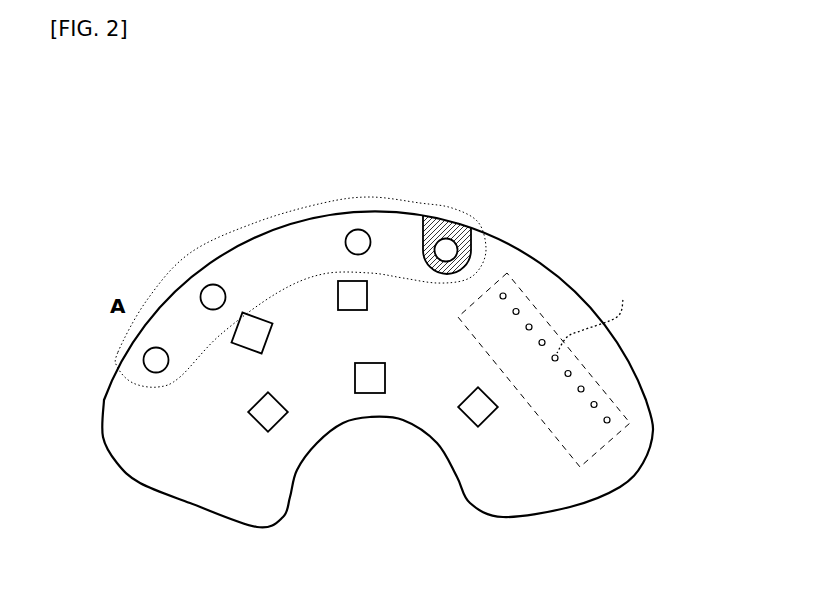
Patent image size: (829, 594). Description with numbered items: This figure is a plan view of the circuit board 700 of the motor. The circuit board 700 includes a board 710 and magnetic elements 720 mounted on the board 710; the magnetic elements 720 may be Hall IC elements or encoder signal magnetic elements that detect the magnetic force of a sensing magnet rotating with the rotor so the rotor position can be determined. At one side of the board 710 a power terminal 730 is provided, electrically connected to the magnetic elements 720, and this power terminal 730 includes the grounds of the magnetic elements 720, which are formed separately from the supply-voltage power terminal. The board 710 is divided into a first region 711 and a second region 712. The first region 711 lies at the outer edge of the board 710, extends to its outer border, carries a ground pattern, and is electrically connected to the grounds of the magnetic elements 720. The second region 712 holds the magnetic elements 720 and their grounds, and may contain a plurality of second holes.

The circuit board 700 is at (527, 219).
The board 710 is at (437, 122).
The first region 711 is at (450, 218).
The second region 712 is at (297, 250).
The magnetic elements 720 is at (368, 383).
The power terminal 730 is at (522, 285).